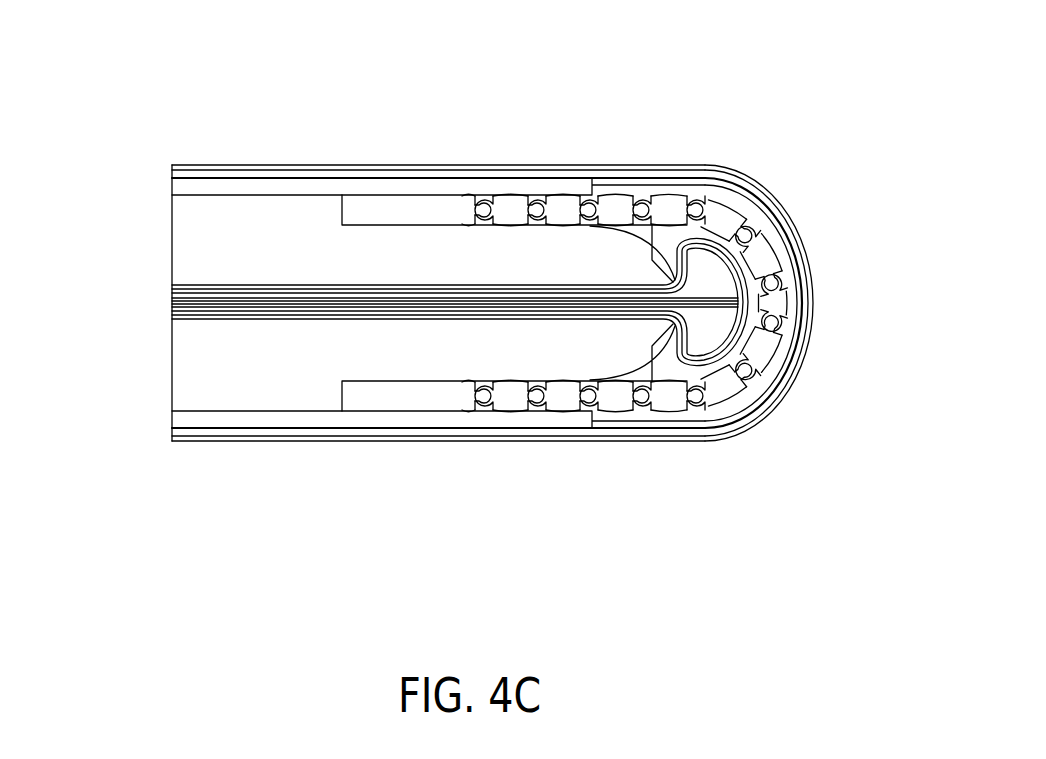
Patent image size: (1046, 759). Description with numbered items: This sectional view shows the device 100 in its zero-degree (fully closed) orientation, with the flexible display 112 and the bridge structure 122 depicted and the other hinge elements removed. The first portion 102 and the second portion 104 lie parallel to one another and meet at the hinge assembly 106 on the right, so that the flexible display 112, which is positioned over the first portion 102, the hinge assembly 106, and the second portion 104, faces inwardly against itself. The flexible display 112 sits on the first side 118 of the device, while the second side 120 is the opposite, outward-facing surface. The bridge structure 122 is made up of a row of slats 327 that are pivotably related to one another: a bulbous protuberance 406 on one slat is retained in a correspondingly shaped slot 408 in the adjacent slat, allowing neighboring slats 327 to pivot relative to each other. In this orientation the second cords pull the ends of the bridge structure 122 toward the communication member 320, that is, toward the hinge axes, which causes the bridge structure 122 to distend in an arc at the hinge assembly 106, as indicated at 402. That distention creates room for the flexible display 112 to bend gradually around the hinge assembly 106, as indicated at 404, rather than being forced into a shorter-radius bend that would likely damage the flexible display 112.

The device 100 is at (693, 58).
The first portion 102 is at (173, 163).
The second portion 104 is at (176, 450).
The hinge assembly 106 is at (786, 157).
The flexible display 112 is at (193, 320).
The first side 118 is at (172, 296).
The second side 120 is at (497, 449).
The bridge structure 122 is at (358, 403).
The communication member 320 is at (768, 423).
The slats 327 is at (523, 413).
The arc of the bridge structure 402 is at (819, 303).
The gradual bend of the flexible display 404 is at (745, 262).
The bulbous protuberance 406 is at (484, 216).
The slot 408 is at (483, 203).